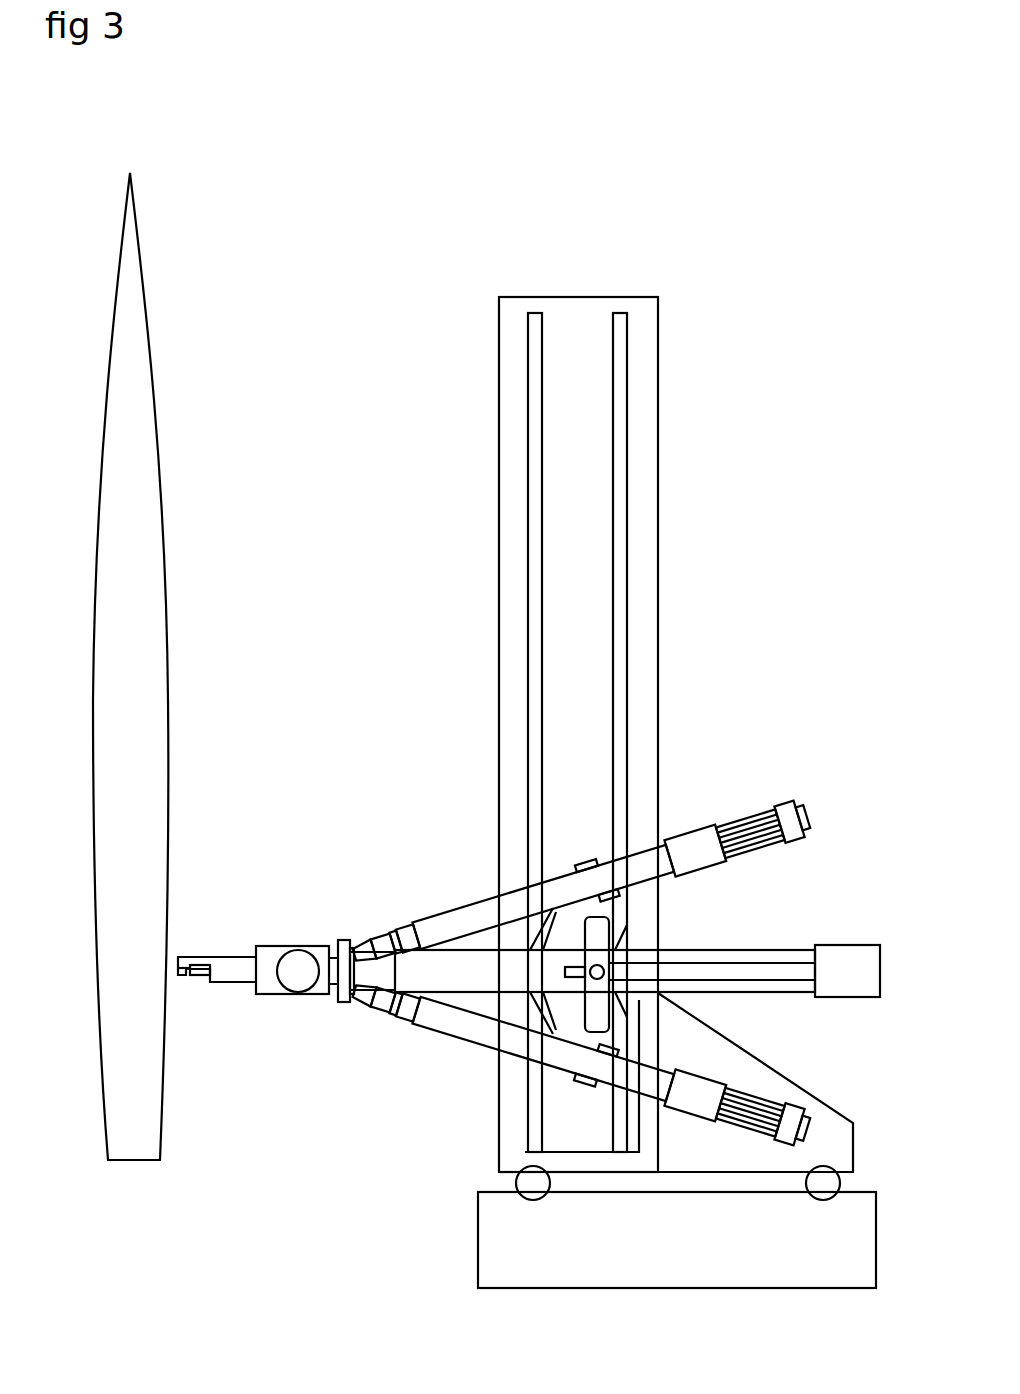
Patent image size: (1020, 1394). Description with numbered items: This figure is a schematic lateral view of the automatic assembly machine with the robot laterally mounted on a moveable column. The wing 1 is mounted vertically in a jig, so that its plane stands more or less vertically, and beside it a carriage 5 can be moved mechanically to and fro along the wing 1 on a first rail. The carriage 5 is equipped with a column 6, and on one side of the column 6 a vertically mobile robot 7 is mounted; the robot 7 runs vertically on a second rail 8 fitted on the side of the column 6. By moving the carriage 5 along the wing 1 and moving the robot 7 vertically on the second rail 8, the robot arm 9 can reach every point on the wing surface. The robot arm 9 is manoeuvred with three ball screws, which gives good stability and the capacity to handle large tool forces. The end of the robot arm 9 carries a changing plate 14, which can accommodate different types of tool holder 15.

The wing 1 is at (94, 748).
The carriage 5 is at (790, 1073).
The column 6 is at (638, 648).
The robot 7 is at (603, 930).
The second rail 8 is at (620, 558).
The robot arm 9 is at (458, 958).
The changing plate 14 is at (255, 948).
The tool holder 15 is at (235, 955).